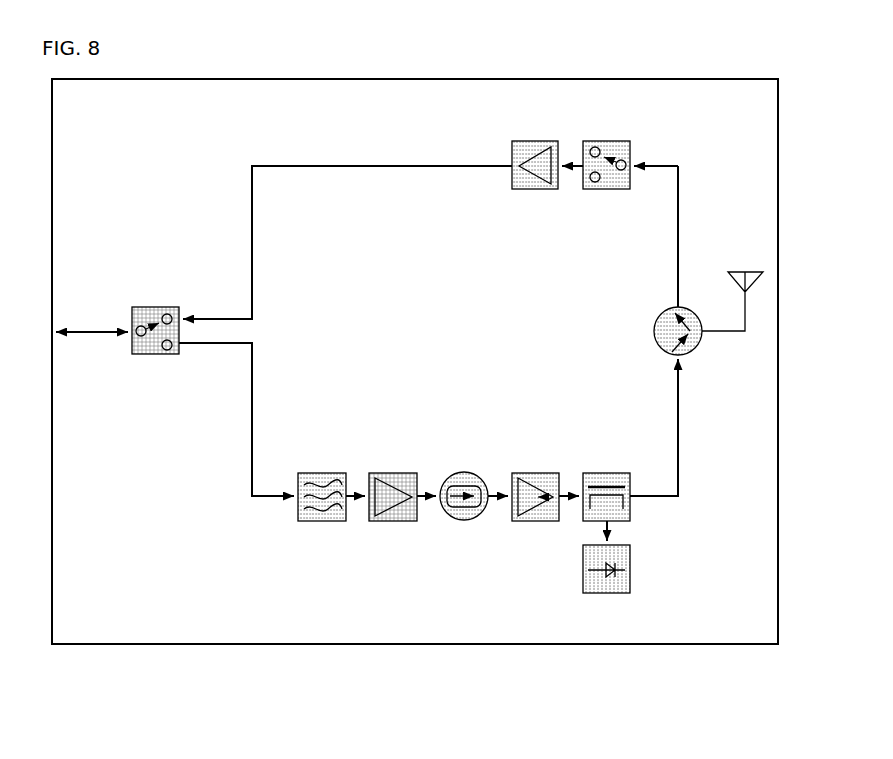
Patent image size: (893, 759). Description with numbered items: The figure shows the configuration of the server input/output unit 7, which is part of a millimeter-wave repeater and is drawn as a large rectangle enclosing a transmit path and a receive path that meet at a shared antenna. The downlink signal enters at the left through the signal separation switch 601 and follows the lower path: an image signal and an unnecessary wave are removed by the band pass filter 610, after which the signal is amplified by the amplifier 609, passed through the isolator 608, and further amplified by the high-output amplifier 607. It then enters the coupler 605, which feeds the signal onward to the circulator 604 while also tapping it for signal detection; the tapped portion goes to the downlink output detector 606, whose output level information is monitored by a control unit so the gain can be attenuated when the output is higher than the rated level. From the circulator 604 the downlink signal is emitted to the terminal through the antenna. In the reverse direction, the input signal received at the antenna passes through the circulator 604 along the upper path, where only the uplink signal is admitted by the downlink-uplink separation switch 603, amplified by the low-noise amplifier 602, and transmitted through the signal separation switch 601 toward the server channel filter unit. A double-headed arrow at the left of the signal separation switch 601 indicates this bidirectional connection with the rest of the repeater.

The server input/output unit 7 is at (482, 648).
The signal separation switch 601 is at (155, 305).
The low-noise amplifier 602 is at (541, 140).
The downlink-uplink separation switch 603 is at (610, 140).
The circulator 604 is at (695, 350).
The coupler 605 is at (595, 472).
The downlink output detector 606 is at (612, 595).
The high-output amplifier 607 is at (528, 472).
The isolator 608 is at (455, 472).
The amplifier 609 is at (389, 472).
The band pass filter 610 is at (318, 472).